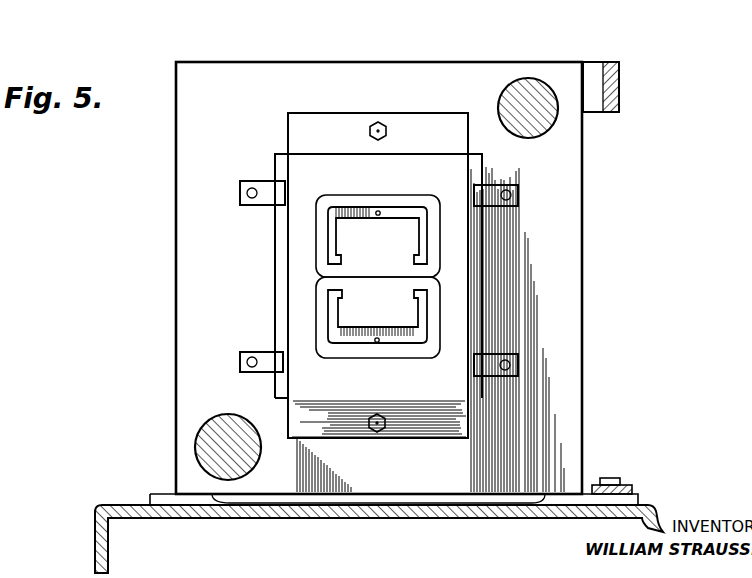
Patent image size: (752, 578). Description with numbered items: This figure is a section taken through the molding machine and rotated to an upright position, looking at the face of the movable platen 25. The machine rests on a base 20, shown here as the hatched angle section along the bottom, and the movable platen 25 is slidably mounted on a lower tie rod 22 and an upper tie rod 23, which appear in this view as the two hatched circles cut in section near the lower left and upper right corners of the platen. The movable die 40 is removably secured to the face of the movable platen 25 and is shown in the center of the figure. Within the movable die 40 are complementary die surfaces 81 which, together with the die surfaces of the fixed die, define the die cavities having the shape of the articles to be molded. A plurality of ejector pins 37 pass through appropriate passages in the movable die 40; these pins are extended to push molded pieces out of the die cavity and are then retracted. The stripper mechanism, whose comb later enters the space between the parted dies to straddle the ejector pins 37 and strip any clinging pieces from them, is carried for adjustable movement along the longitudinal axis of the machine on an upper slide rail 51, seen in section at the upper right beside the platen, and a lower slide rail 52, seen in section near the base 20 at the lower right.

The base 20 is at (93, 512).
The lower tie rod 22 is at (210, 436).
The upper tie rod 23 is at (540, 82).
The movable platen 25 is at (572, 250).
The ejector pins 37 is at (330, 215).
The movable die 40 is at (455, 316).
The upper slide rail 51 is at (620, 110).
The lower slide rail 52 is at (618, 476).
The die surfaces 81 is at (425, 218).